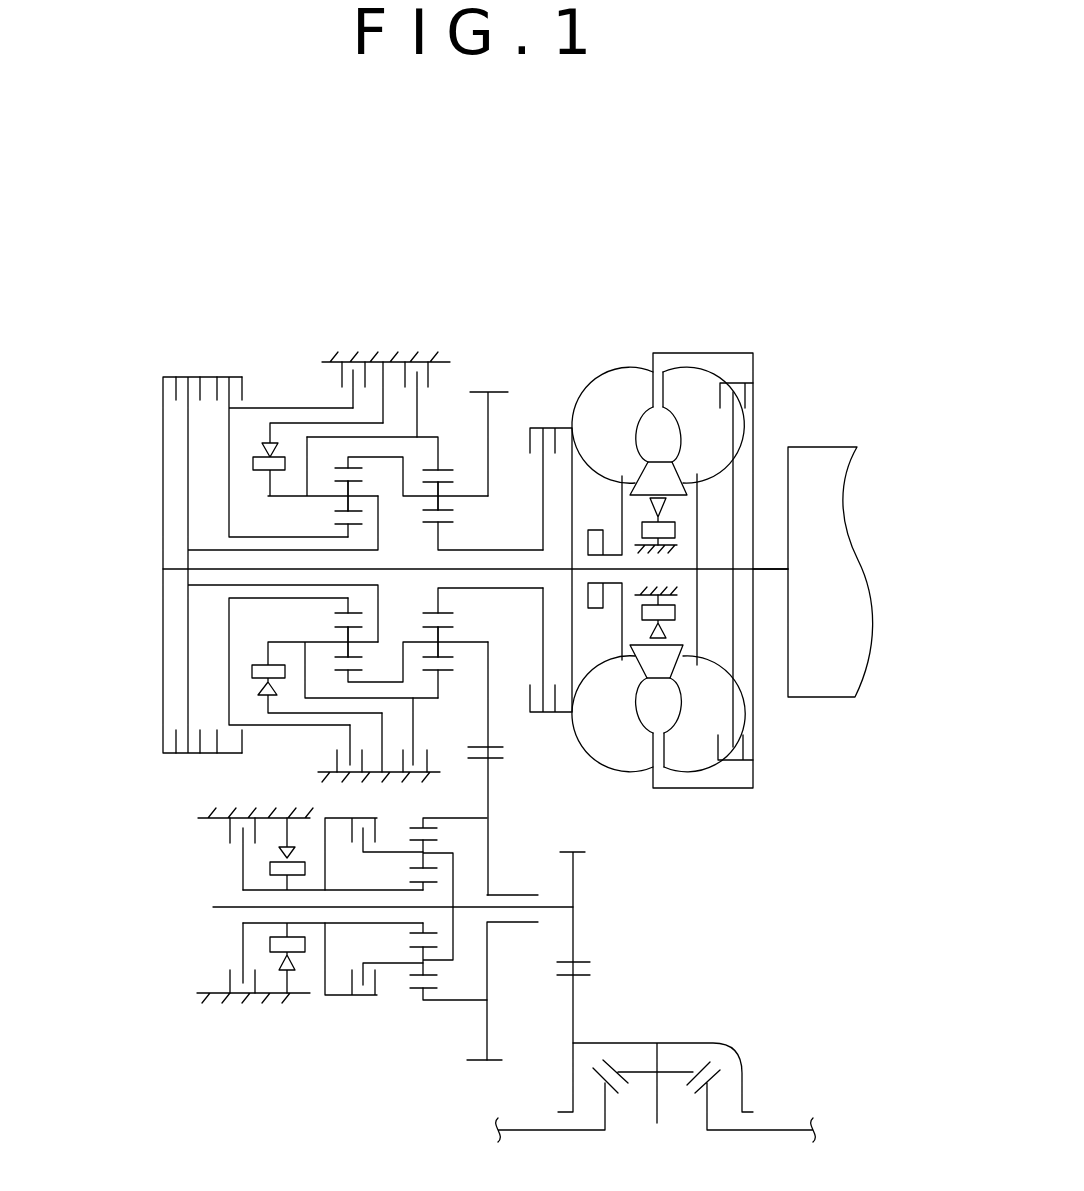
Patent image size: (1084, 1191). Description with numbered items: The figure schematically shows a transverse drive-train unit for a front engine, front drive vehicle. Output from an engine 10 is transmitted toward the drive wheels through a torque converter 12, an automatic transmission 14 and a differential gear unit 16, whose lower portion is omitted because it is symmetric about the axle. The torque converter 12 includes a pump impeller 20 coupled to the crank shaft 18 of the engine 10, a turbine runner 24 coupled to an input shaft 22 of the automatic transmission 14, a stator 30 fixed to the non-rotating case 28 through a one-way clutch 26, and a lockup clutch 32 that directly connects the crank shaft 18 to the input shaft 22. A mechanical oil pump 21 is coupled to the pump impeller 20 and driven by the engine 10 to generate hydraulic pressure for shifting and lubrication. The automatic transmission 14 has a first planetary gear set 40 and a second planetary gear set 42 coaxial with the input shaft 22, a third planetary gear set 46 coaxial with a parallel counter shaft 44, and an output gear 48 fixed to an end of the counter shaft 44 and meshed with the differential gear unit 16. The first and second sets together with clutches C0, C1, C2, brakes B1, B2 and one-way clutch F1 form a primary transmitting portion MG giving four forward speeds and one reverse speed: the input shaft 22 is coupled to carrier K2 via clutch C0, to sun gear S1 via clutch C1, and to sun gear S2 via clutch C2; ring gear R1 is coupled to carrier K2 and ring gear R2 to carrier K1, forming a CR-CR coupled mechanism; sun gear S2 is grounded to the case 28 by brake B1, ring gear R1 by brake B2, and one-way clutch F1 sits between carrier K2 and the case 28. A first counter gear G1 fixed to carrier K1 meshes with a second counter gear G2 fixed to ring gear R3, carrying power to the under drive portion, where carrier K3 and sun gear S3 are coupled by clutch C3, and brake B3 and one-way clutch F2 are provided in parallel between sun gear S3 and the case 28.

The engine 10 is at (826, 467).
The torque converter 12 is at (702, 536).
The automatic transmission 14 is at (342, 543).
The differential gear unit 16 is at (655, 1004).
The crank shaft 18 is at (777, 580).
The pump impeller 20 is at (642, 390).
The mechanical oil pump 21 is at (597, 530).
The input shaft 22 is at (512, 572).
The turbine runner 24 is at (677, 752).
The one-way clutch 26 is at (637, 648).
The case 28 is at (388, 353).
The stator 30 is at (648, 462).
The lockup clutch 32 is at (747, 398).
The first planetary gear set 40 is at (425, 609).
The second planetary gear set 42 is at (361, 513).
The counter shaft 44 is at (228, 905).
The third planetary gear set 46 is at (410, 1010).
The output gear 48 is at (583, 960).
The primary transmitting portion MG is at (229, 546).
The clutch C0 is at (178, 385).
The clutch C1 is at (541, 427).
The clutch C2 is at (230, 380).
The clutch C3 is at (370, 998).
The brake B1 is at (340, 375).
The brake B2 is at (433, 376).
The brake B3 is at (228, 983).
The one-way clutch F1 is at (252, 462).
The one-way clutch F2 is at (297, 956).
The ring gear R1 is at (468, 457).
The ring gear R2 is at (363, 470).
The ring gear R3 is at (420, 826).
The sun gear S1 is at (440, 520).
The sun gear S2 is at (348, 523).
The sun gear S3 is at (418, 884).
The carrier K1 is at (472, 496).
The carrier K2 is at (322, 497).
The carrier K3 is at (430, 853).
The first counter gear G1 is at (498, 743).
The second counter gear G2 is at (493, 1060).